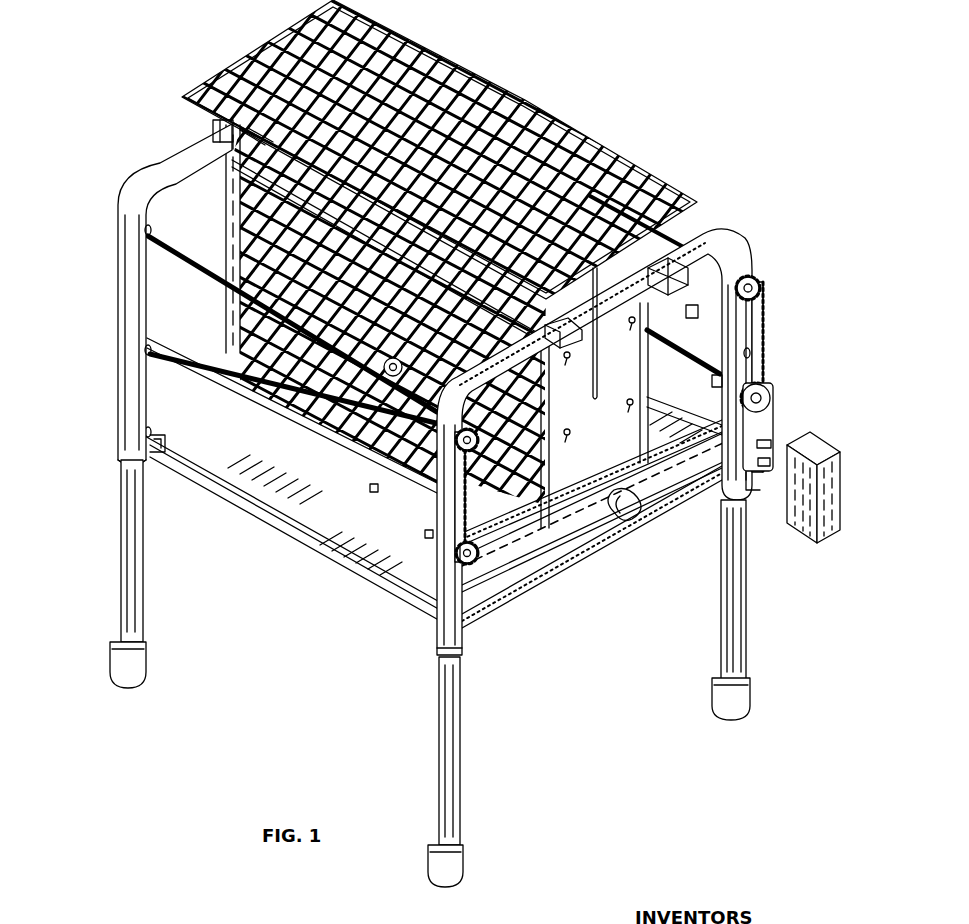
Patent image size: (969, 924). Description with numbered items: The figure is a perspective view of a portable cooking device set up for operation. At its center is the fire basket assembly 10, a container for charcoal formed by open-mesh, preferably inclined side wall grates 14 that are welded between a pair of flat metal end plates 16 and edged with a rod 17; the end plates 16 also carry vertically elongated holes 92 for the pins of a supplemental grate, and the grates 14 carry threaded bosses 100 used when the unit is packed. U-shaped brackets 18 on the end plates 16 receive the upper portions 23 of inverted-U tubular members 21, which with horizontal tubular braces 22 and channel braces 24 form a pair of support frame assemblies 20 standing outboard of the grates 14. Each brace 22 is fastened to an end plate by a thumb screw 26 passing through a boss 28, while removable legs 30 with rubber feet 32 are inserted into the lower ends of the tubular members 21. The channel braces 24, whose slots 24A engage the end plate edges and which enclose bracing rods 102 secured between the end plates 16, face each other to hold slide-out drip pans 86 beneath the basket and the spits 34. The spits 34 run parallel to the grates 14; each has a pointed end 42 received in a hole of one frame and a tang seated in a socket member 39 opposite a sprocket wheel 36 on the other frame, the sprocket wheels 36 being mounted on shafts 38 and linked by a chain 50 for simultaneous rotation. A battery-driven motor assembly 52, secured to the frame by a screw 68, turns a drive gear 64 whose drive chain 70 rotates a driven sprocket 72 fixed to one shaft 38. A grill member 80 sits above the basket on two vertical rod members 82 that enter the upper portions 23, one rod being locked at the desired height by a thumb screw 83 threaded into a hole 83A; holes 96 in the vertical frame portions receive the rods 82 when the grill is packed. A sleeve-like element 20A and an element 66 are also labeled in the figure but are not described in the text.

The fire basket assembly 10 is at (217, 228).
The side wall grates 14 is at (262, 270).
The end plates 16 is at (226, 197).
The rod 17 is at (262, 176).
The U-shaped brackets 18 is at (212, 126).
The support frame assemblies 20 is at (121, 450).
The sleeve 20A is at (707, 307).
The tubular members 21 is at (118, 372).
The horizontal tubular braces 22 is at (200, 341).
The upper portions of the tubular members 23 is at (180, 162).
The channel braces 24 is at (144, 432).
The slots 24A is at (180, 443).
The thumb screw 26 is at (652, 522).
The boss 28 is at (614, 548).
The removable legs 30 is at (140, 610).
The rubber feet 32 is at (142, 672).
The spits 34 is at (205, 278).
The sprocket wheels 36 is at (440, 494).
The shafts 38 is at (772, 285).
The socket member 39 is at (372, 489).
The pointed end 42 is at (144, 229).
The chain 50 is at (452, 550).
The motor assembly 52 is at (803, 540).
The drive gear 64 is at (770, 462).
The mounting bracket 66 is at (760, 492).
The screw 68 is at (771, 442).
The drive chain 70 is at (773, 422).
The driven sprocket 72 is at (772, 400).
The grill member 80 is at (522, 100).
The rod members 82 is at (288, 52).
The thumb screw 83 is at (666, 268).
The hole 83A is at (551, 337).
The drip pans 86 is at (305, 547).
The holes 92 is at (633, 326).
The holes 96 is at (760, 351).
The threaded bosses 100 is at (395, 357).
The bracing rods 102 is at (325, 440).